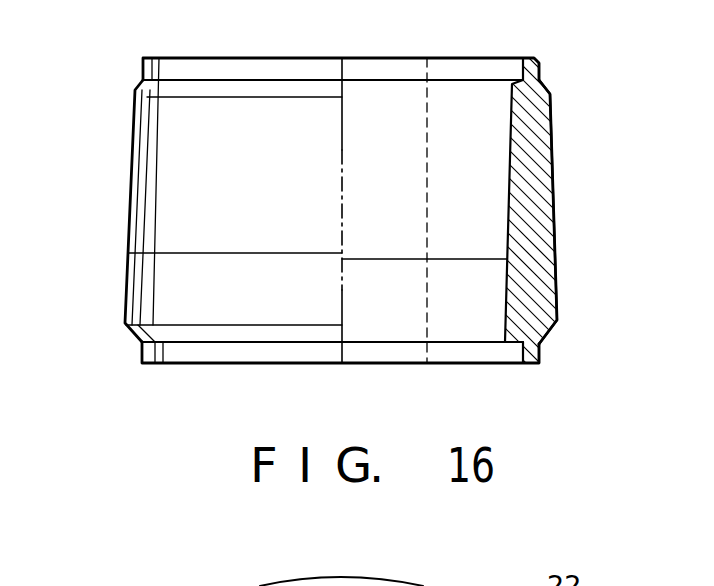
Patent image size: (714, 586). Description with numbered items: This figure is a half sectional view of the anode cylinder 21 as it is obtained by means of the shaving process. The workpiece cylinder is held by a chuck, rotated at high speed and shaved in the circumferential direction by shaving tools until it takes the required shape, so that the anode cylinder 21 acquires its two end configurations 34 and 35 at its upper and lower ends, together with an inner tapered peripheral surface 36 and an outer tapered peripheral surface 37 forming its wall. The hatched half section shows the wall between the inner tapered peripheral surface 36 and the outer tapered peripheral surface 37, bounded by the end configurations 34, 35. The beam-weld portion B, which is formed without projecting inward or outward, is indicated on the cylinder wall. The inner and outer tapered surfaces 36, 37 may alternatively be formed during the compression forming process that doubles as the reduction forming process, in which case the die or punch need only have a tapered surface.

The anode cylinder 21 is at (119, 169).
The end configuration 34 is at (532, 58).
The end configuration 35 is at (542, 352).
The inner tapered peripheral surface 36 is at (511, 158).
The outer tapered peripheral surface 37 is at (553, 165).
The beam-weld portion B is at (427, 100).